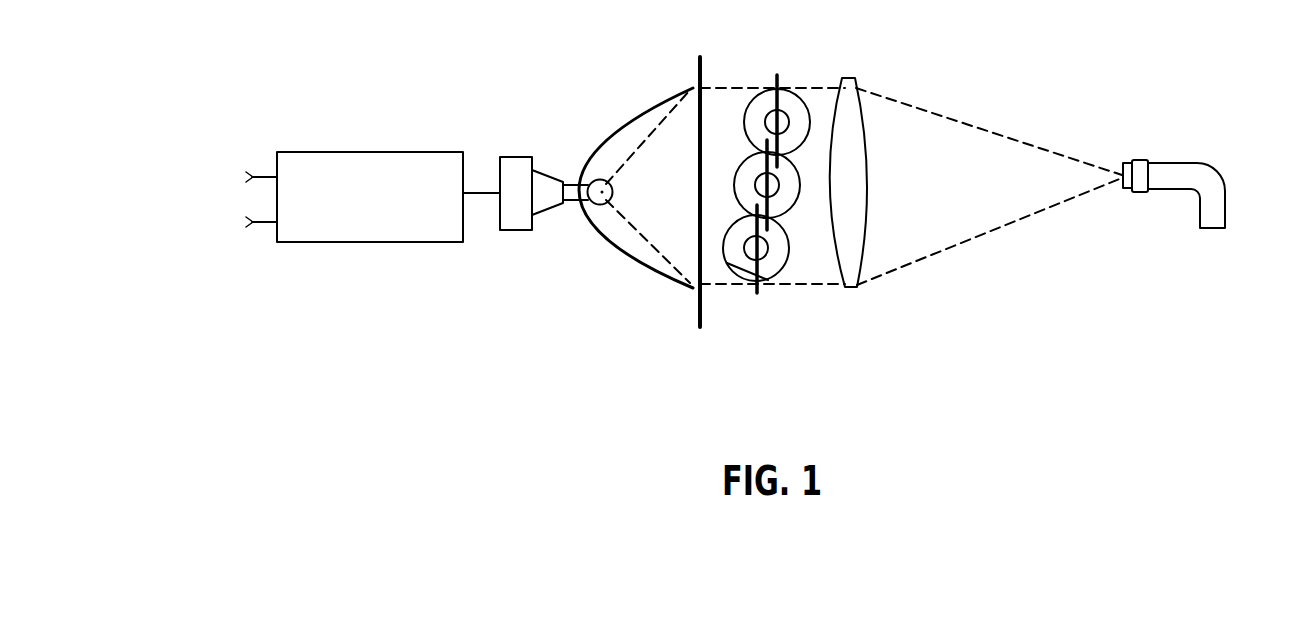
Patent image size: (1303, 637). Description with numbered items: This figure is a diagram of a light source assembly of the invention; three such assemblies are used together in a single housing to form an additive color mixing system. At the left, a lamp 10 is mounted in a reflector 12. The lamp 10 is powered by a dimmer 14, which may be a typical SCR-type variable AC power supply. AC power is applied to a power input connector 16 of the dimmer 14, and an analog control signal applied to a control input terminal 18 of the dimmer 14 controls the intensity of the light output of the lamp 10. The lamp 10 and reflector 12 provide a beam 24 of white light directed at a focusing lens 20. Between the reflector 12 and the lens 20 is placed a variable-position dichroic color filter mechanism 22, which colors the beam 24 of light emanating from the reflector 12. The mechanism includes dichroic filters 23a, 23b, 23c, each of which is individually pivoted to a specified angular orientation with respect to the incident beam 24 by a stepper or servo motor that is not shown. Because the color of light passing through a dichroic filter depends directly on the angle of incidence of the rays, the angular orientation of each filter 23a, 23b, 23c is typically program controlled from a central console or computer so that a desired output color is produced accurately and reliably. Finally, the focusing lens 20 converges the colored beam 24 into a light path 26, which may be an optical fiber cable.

The lamp 10 is at (556, 224).
The reflector 12 is at (662, 277).
The dimmer 14 is at (388, 162).
The power input connector 16 is at (227, 247).
The control input terminal 18 is at (208, 141).
The focusing lens 20 is at (867, 183).
The variable-position dichroic color filter mechanism 22 is at (811, 206).
The dichroic filter 23a is at (812, 104).
The dichroic filter 23b is at (818, 230).
The dichroic filter 23c is at (720, 317).
The beam 24 is at (722, 87).
The light path 26 is at (1182, 165).